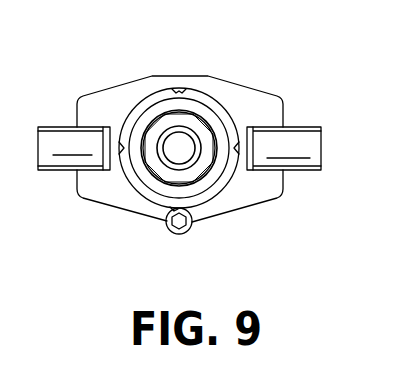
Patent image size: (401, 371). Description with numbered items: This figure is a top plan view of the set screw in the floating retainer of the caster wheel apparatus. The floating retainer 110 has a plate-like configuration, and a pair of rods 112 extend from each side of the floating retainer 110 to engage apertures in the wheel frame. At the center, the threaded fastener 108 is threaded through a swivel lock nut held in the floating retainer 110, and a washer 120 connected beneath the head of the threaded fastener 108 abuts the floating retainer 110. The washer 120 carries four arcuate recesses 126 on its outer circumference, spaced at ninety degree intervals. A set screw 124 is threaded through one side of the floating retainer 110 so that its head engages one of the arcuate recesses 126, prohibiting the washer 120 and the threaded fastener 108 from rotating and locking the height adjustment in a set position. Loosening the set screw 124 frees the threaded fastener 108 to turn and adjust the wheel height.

The threaded fastener 108 is at (164, 124).
The floating retainer 110 is at (283, 117).
The rods 112 is at (50, 158).
The washer 120 is at (212, 93).
The set screw 124 is at (190, 220).
The arcuate recess 126 is at (181, 92).